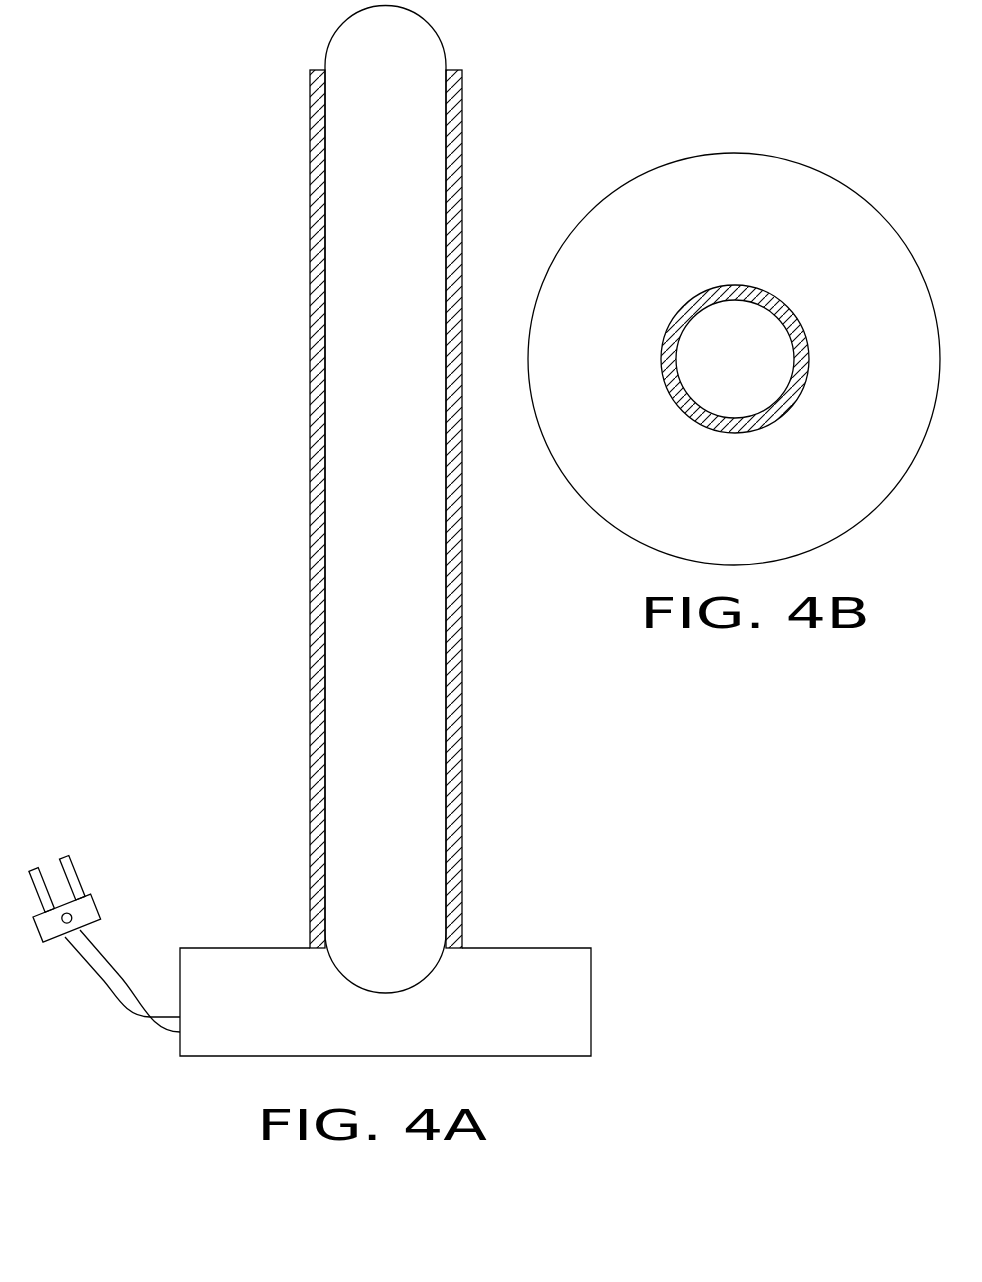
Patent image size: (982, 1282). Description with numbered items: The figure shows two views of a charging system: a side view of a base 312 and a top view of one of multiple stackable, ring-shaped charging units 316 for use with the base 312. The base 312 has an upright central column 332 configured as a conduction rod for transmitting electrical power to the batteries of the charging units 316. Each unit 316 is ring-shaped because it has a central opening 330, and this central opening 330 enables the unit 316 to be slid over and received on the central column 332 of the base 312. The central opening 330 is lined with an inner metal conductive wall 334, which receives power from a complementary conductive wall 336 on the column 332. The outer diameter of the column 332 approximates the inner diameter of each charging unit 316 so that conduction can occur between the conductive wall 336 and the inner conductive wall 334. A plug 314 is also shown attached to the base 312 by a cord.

In FIG. 4A, the base 312 is at (532, 1032).
In FIG. 4A, the power plug 314 is at (92, 903).
In FIG. 4B, the ring-shaped charging unit 316 is at (825, 182).
In FIG. 4B, the central opening 330 is at (731, 352).
In FIG. 4A, the central column 332 is at (368, 517).
In FIG. 4B, the inner metal conductive wall 334 is at (776, 421).
In FIG. 4A, the conductive wall 336 is at (312, 287).